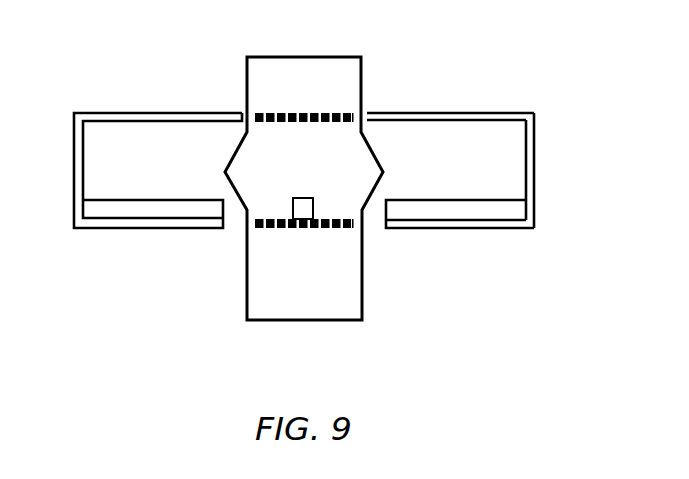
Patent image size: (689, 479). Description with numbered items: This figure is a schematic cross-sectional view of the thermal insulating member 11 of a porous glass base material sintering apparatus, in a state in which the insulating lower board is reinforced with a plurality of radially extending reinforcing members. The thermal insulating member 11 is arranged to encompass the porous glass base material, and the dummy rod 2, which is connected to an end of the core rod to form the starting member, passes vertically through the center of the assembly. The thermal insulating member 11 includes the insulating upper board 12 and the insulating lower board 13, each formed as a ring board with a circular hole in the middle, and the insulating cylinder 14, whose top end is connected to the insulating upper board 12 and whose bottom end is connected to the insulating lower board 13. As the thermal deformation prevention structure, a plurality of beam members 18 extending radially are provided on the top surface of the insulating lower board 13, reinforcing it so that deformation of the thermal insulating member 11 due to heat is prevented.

The dummy rod 2 is at (362, 70).
The thermal insulating member 11 is at (101, 100).
The insulating upper board 12 is at (485, 110).
The insulating lower board 13 is at (485, 229).
The insulating cylinder 14 is at (535, 168).
The beam member 18 is at (198, 208).